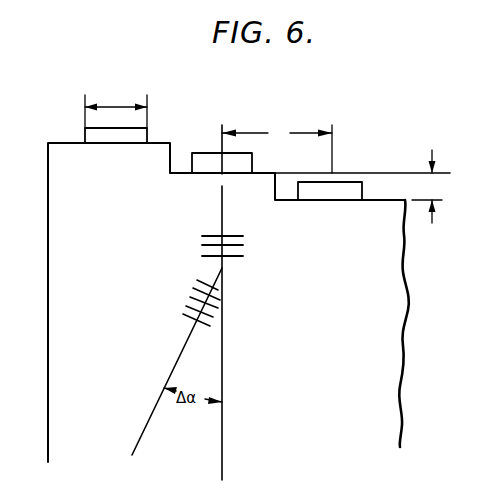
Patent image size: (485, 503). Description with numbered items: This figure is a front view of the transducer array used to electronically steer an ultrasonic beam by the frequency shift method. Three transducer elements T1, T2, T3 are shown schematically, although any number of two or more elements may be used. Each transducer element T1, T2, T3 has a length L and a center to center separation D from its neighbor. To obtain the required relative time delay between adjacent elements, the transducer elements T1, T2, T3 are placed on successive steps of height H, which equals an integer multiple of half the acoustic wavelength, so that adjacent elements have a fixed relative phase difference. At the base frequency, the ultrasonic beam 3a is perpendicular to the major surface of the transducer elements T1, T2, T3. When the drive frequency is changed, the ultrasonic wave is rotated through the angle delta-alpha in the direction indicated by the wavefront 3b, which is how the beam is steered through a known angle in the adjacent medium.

The transducer element T1 is at (107, 137).
The transducer element T2 is at (227, 163).
The transducer element T3 is at (333, 192).
The length L is at (116, 109).
The center to center separation D is at (277, 148).
The step height H is at (427, 186).
The ultrasonic beam 3a is at (243, 245).
The wavefront 3b is at (195, 298).